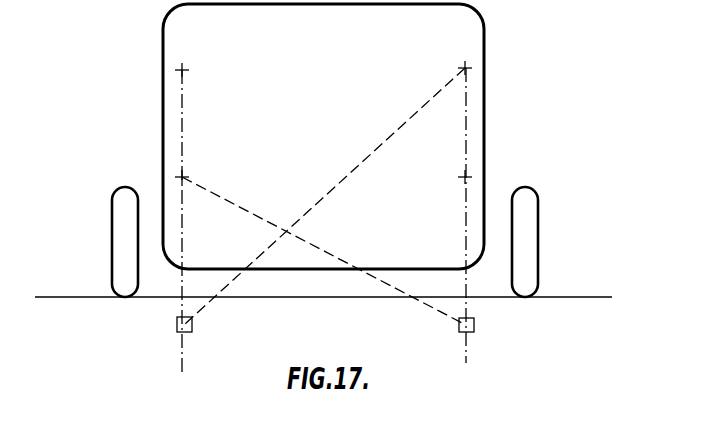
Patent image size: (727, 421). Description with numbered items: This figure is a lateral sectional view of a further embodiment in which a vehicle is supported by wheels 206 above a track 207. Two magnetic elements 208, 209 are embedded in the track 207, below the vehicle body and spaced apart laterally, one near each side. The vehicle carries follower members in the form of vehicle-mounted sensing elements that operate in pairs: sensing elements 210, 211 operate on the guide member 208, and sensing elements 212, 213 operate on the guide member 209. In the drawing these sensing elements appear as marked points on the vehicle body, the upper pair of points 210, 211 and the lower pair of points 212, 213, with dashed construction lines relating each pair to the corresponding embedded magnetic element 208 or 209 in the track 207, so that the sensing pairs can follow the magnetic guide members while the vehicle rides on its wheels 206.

The wheels 206 is at (121, 246).
The track 207 is at (568, 296).
The magnetic element 208 is at (188, 331).
The magnetic element 209 is at (459, 331).
The sensing element 210 is at (183, 69).
The sensing element 211 is at (464, 67).
The sensing element 212 is at (183, 176).
The sensing element 213 is at (464, 176).